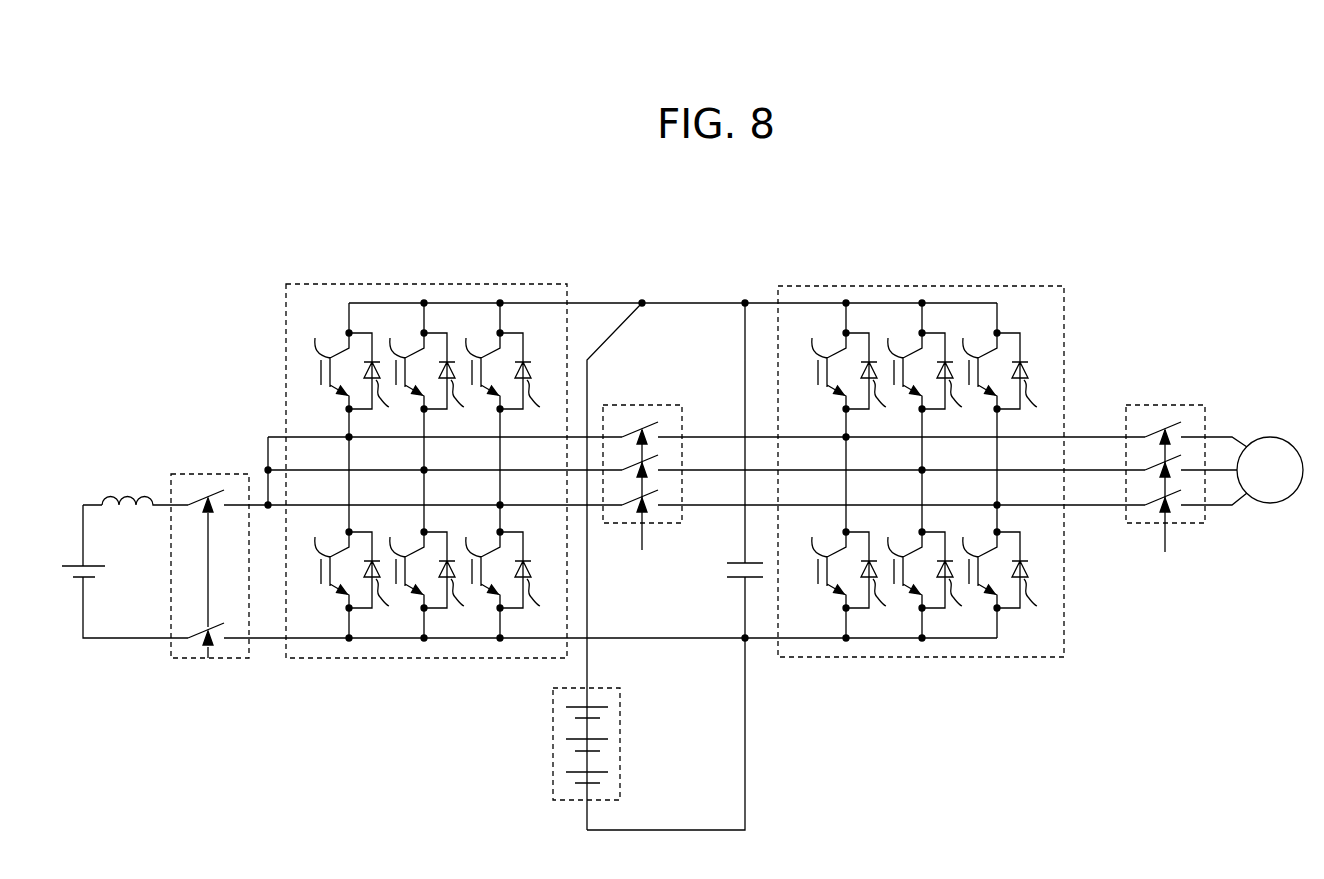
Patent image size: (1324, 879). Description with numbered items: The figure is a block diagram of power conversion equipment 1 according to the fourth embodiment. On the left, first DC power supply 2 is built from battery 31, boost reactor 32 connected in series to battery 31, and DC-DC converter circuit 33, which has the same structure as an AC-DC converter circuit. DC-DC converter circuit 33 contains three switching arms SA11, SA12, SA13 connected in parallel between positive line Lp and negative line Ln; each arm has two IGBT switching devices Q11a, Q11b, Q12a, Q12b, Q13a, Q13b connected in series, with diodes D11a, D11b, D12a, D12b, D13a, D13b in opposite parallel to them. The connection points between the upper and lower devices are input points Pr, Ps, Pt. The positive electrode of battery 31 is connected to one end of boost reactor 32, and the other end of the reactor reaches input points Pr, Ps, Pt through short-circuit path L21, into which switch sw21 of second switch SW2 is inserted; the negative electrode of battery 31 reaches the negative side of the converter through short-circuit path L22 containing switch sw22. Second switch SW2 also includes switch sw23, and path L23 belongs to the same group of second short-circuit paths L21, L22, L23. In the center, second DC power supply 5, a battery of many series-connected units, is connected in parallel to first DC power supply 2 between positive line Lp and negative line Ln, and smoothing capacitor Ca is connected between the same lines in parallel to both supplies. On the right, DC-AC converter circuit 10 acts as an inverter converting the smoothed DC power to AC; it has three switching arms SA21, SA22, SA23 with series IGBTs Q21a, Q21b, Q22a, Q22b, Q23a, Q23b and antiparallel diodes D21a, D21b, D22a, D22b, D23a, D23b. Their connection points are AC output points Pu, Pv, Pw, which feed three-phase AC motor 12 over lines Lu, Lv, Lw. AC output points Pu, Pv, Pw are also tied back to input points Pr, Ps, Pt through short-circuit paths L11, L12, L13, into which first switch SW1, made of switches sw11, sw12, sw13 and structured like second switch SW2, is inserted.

The power conversion equipment 1 is at (872, 220).
The first DC power supply 2 is at (267, 318).
The second DC power supply 5 is at (620, 743).
The DC-AC converter circuit 10 is at (1023, 286).
The three-phase AC motor 12 is at (1268, 437).
The battery 31 is at (73, 562).
The boost reactor 32 is at (118, 497).
The DC-DC converter circuit 33 is at (372, 285).
The positive line Lp is at (545, 303).
The negative line Ln is at (485, 641).
The switching arm SA11 is at (342, 300).
The switching arm SA12 is at (417, 300).
The switching arm SA13 is at (492, 300).
The switching arm SA21 is at (832, 300).
The switching arm SA22 is at (907, 300).
The switching arm SA23 is at (983, 300).
The switching device Q11a is at (322, 360).
The switching device Q12a is at (397, 360).
The switching device Q13a is at (473, 360).
The switching device Q11b is at (322, 560).
The switching device Q12b is at (397, 560).
The switching device Q13b is at (473, 560).
The switching device Q21a is at (819, 360).
The switching device Q22a is at (895, 360).
The switching device Q23a is at (970, 360).
The switching device Q21b is at (819, 560).
The switching device Q22b is at (895, 560).
The switching device Q23b is at (970, 560).
The diode D11a is at (380, 385).
The diode D12a is at (456, 385).
The diode D13a is at (531, 385).
The diode D11b is at (380, 585).
The diode D12b is at (456, 585).
The diode D13b is at (531, 585).
The diode D21a is at (878, 385).
The diode D22a is at (954, 385).
The diode D23a is at (1029, 385).
The diode D21b is at (878, 585).
The diode D22b is at (954, 585).
The diode D23b is at (1029, 585).
The input point Pr is at (352, 441).
The input point Ps is at (427, 474).
The input point Pt is at (504, 502).
The AC output point Pu is at (849, 441).
The AC output point Pv is at (925, 474).
The AC output point Pw is at (1001, 497).
The short-circuit path L11 is at (692, 437).
The short-circuit path L12 is at (692, 470).
The short-circuit path L13 is at (692, 505).
The second short-circuit path L21 is at (259, 500).
The second short-circuit path L22 is at (275, 640).
The second short-circuit path L23 is at (1075, 505).
The first switch SW1 is at (673, 523).
The switch sw11 is at (634, 423).
The switch sw12 is at (654, 457).
The switch sw13 is at (640, 500).
The second switch SW2 is at (185, 474).
The switch sw21 is at (215, 490).
The switch sw22 is at (222, 630).
The switch sw23 is at (1158, 500).
The motor line Lu is at (1225, 437).
The motor line Lv is at (1222, 478).
The motor line Lw is at (1220, 505).
The smoothing capacitor Ca is at (750, 562).